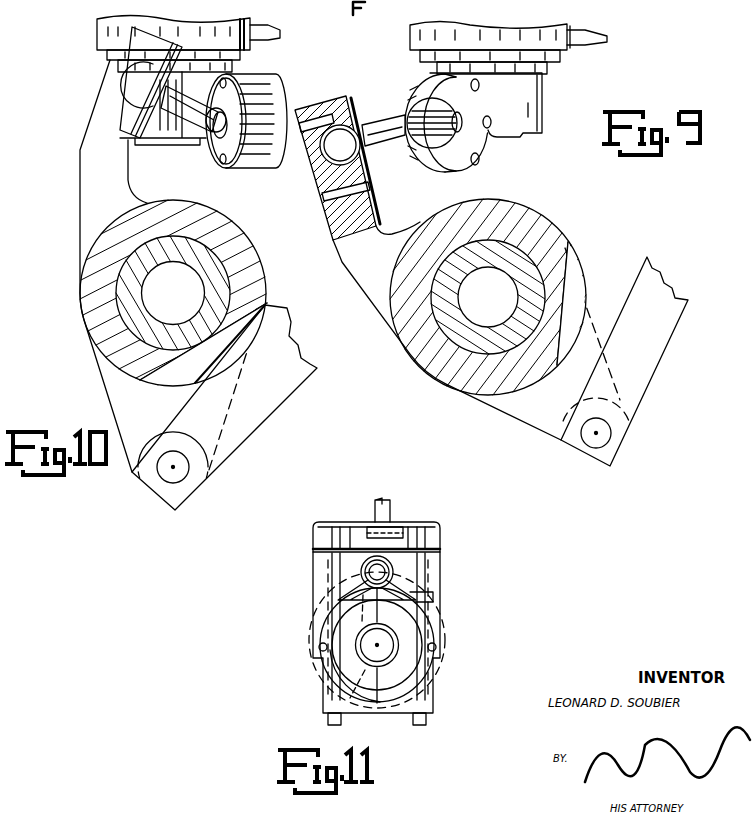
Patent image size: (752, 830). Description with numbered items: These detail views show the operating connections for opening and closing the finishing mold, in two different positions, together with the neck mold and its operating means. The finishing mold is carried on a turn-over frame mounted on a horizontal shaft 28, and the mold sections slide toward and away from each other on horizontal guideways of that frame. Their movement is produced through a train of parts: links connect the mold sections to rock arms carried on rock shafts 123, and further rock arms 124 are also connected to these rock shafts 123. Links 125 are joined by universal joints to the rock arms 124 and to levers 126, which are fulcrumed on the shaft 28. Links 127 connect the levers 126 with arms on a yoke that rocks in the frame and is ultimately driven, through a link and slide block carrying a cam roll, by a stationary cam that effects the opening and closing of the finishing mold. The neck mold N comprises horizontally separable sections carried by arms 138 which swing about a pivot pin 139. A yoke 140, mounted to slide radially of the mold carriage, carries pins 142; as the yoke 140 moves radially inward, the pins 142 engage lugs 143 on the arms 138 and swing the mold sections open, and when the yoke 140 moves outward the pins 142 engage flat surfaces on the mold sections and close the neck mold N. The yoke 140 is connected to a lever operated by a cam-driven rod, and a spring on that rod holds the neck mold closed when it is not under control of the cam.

In FIG. 10, the horizontal shaft 28 is at (185, 293).
In FIG. 9, the horizontal shaft 28 is at (501, 297).
In FIG. 10, the rock shafts 123 is at (151, 98).
In FIG. 9, the rock shafts 123 is at (335, 168).
In FIG. 9, the rock arms 124 is at (476, 122).
In FIG. 10, the links 125 is at (193, 134).
In FIG. 9, the links 125 is at (362, 126).
In FIG. 10, the levers 126 is at (148, 266).
In FIG. 9, the levers 126 is at (451, 331).
In FIG. 10, the links 127 is at (228, 407).
In FIG. 9, the links 127 is at (633, 361).
In FIG. 11, the arms 138 is at (424, 570).
In FIG. 11, the pivot pin 139 is at (323, 569).
In FIG. 11, the yoke 140 is at (431, 576).
In FIG. 11, the pins 142 is at (409, 645).
In FIG. 11, the lugs 143 is at (421, 632).
In FIG. 11, the neck mold N is at (398, 685).